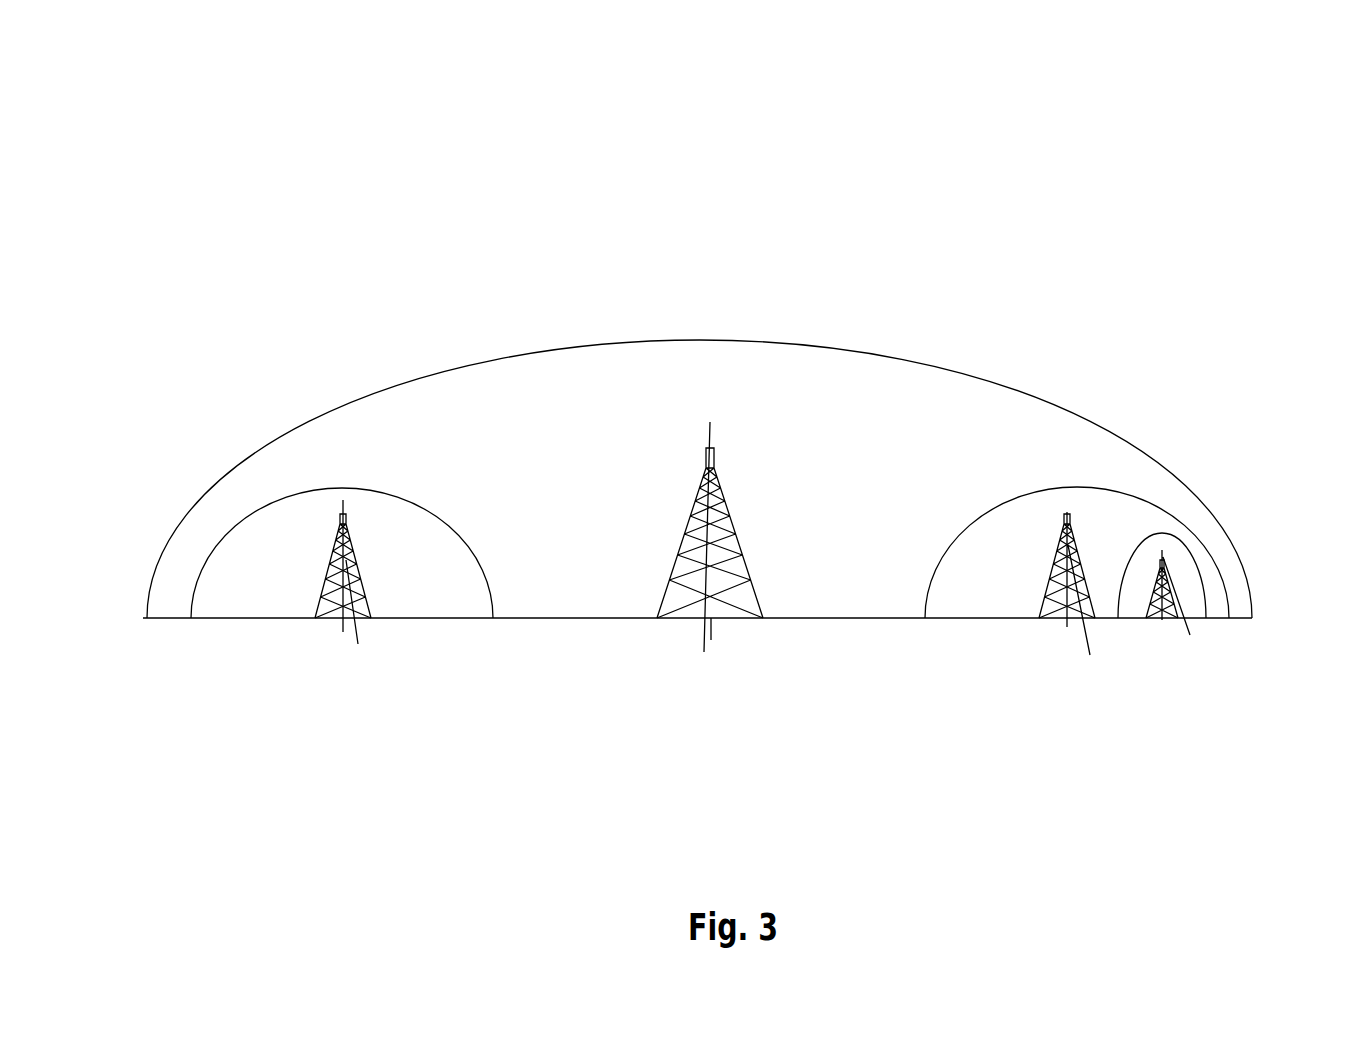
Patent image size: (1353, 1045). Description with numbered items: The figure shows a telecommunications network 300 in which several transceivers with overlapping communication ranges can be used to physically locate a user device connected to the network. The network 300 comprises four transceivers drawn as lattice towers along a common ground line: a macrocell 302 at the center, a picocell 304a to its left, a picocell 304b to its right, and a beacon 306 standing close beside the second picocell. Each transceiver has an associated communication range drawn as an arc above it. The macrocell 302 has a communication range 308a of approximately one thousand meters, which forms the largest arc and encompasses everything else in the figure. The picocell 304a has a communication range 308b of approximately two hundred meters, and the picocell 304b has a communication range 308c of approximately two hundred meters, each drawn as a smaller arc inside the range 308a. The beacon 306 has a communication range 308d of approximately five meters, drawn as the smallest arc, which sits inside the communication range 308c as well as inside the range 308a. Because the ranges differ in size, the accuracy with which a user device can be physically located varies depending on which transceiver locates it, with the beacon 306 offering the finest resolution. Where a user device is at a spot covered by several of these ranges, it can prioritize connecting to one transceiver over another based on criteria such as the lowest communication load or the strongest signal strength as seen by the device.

The telecommunications network 300 is at (212, 60).
The macrocell 302 is at (721, 640).
The picocell 304a is at (375, 640).
The picocell 304b is at (1082, 638).
The beacon 306 is at (1260, 671).
The communication range 308a is at (490, 339).
The communication range 308b is at (450, 465).
The communication range 308c is at (1063, 466).
The communication range 308d is at (1300, 439).